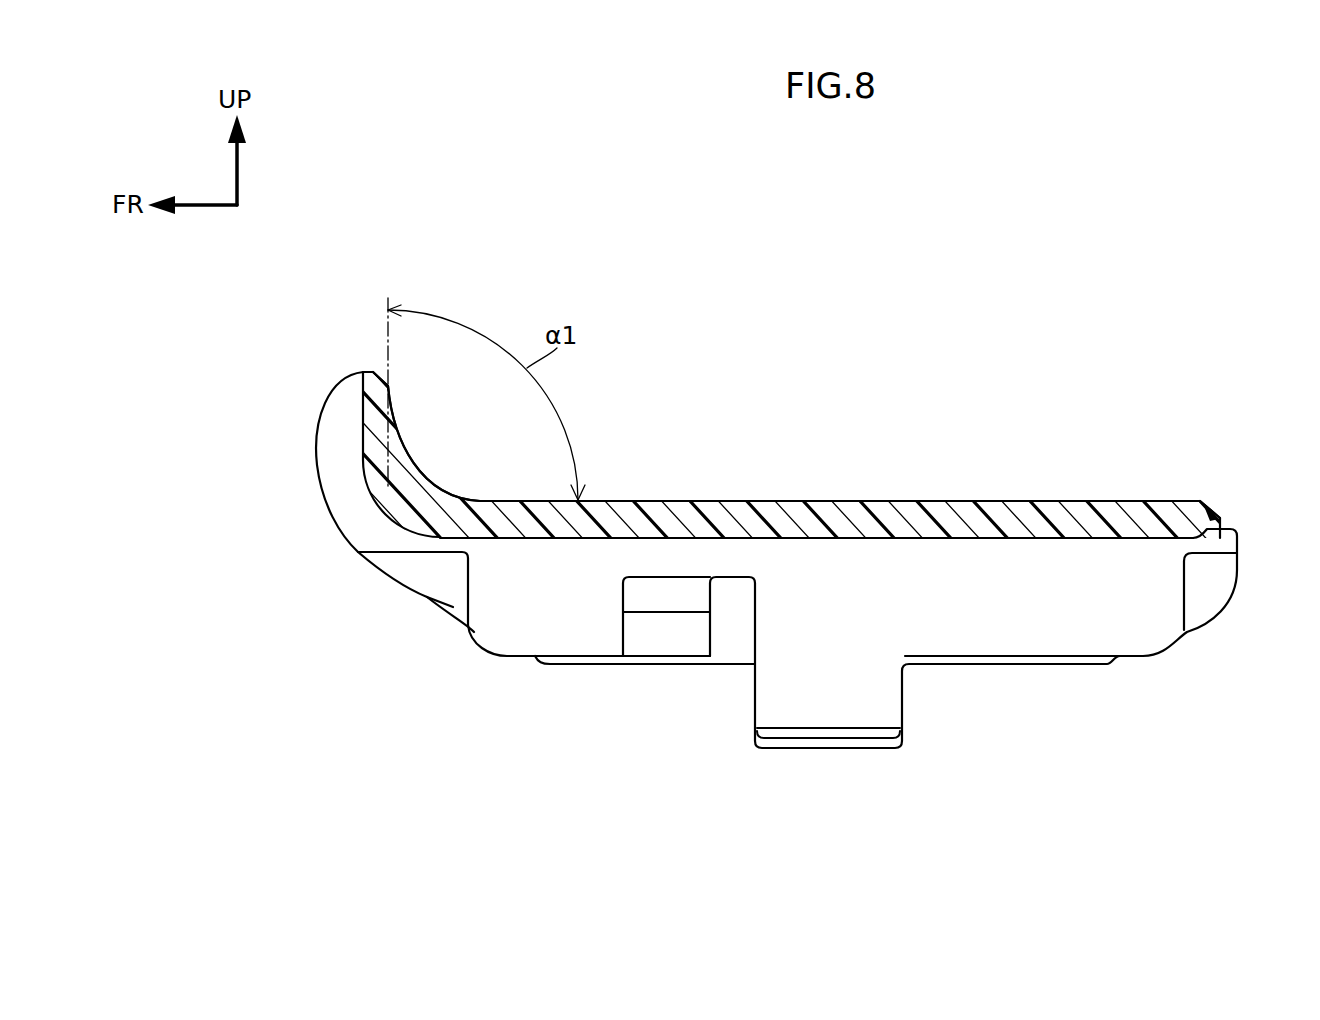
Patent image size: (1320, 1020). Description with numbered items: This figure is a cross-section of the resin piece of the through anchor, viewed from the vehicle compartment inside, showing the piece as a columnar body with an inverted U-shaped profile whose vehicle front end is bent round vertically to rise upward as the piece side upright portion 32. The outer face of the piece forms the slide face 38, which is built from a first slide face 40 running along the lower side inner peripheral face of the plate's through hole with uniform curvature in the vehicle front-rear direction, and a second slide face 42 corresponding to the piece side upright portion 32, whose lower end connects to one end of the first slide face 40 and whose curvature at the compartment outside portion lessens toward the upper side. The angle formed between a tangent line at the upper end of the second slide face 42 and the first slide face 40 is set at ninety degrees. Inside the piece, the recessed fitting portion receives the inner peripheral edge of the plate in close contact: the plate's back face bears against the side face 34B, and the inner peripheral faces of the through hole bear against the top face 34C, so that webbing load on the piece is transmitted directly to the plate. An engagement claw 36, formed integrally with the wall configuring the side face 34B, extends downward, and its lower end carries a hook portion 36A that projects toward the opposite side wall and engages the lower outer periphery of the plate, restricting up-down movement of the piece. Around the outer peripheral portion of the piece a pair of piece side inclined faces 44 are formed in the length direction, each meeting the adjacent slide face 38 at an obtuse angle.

The piece side upright portion 32 is at (392, 420).
The side face of the recessed fitting portion 34B is at (1105, 552).
The top face of the recessed fitting portion 34C is at (934, 540).
The engagement claw 36 is at (787, 685).
The hook portion 36A is at (825, 750).
The slide face 38 is at (770, 492).
The first slide face 40 is at (787, 501).
The second slide face 42 is at (433, 478).
The piece side inclined face 44 is at (383, 383).